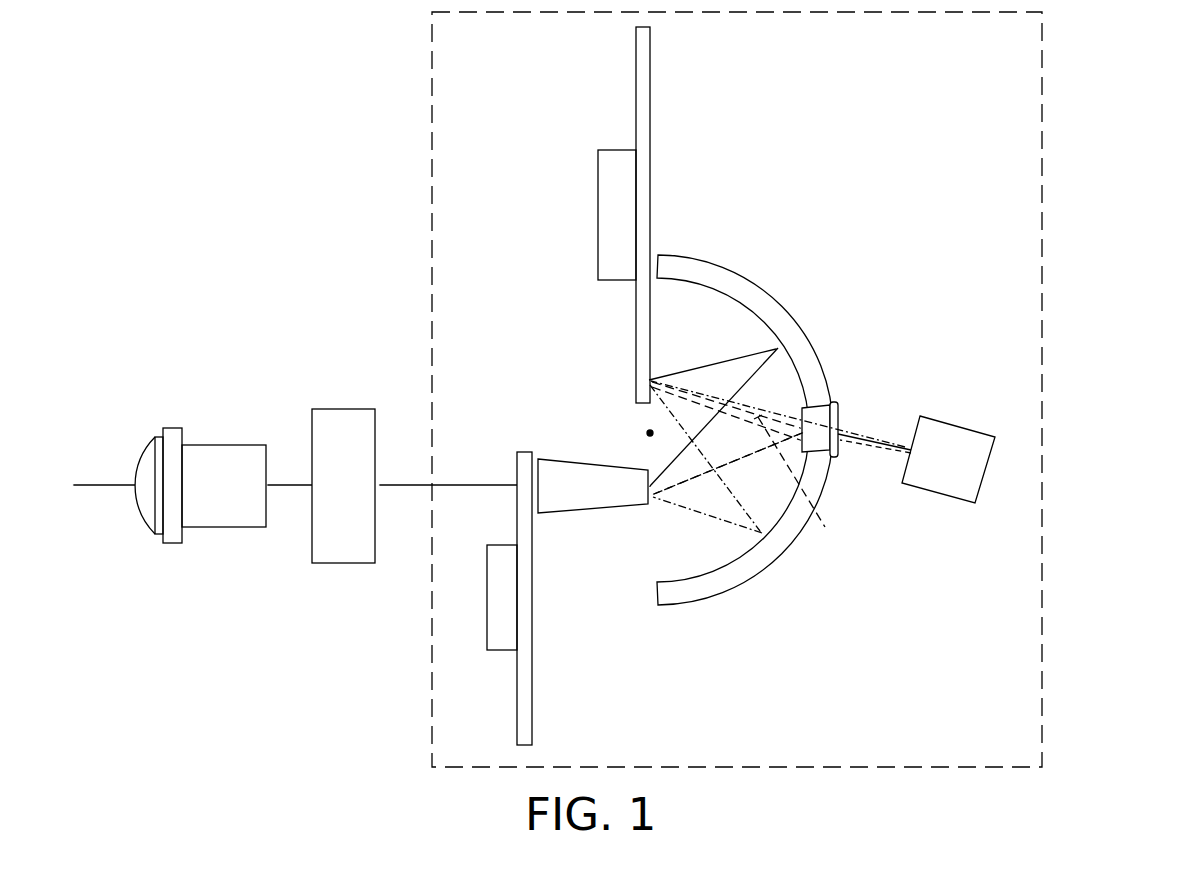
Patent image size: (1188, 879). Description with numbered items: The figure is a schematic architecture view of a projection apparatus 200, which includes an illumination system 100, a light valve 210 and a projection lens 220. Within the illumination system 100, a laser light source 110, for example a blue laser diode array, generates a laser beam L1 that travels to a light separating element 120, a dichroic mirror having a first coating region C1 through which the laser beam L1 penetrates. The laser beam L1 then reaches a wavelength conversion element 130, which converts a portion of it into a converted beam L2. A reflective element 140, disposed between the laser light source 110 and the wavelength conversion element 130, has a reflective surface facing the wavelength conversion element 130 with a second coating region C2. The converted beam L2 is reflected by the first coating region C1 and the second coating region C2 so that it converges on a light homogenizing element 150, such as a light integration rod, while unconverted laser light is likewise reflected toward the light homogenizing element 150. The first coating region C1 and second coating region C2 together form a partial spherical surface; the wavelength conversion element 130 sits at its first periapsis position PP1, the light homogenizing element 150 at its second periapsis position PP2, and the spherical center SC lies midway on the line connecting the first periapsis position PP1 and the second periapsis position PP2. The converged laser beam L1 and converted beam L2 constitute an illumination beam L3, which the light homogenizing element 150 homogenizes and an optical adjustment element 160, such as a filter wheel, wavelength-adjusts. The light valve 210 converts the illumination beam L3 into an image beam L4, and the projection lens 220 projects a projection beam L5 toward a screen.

The illumination system 100 is at (432, 82).
The laser light source 110 is at (950, 437).
The light separating element 120 is at (826, 407).
The wavelength conversion element 130 is at (644, 60).
The reflective element 140 is at (781, 403).
The light homogenizing element 150 is at (582, 500).
The optical adjustment element 160 is at (520, 682).
The projection apparatus 200 is at (628, 545).
The light valve 210 is at (348, 420).
The projection lens 220 is at (225, 455).
The laser beam L1 is at (692, 367).
The converted beam L2 is at (768, 527).
The illumination beam L3 is at (407, 490).
The image beam L4 is at (292, 490).
The projection beam L5 is at (102, 490).
The first periapsis position PP1 is at (643, 380).
The second periapsis position PP2 is at (640, 493).
The spherical center SC is at (640, 433).
The first coating region C1 is at (803, 450).
The second coating region C2 is at (768, 327).